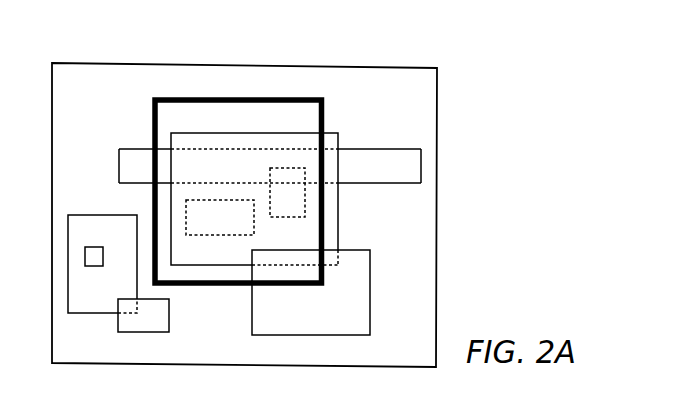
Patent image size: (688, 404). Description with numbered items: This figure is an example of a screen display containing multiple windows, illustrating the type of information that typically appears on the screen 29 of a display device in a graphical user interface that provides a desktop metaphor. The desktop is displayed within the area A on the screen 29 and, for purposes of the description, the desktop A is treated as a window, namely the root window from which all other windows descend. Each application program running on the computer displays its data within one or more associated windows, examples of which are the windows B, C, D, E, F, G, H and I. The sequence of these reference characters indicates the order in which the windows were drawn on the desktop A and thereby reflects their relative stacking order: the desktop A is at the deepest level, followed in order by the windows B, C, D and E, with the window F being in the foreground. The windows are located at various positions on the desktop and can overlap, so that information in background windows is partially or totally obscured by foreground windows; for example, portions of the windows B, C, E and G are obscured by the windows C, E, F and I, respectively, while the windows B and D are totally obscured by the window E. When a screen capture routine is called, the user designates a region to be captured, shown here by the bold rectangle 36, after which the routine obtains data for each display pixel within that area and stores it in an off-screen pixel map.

The screen 29 is at (131, 63).
The bold rectangle 36 is at (281, 98).
The desktop A is at (244, 215).
The window B is at (287, 192).
The window C is at (270, 166).
The window D is at (220, 217).
The window E is at (254, 199).
The window F is at (311, 292).
The window G is at (102, 265).
The window H is at (94, 256).
The window I is at (143, 315).